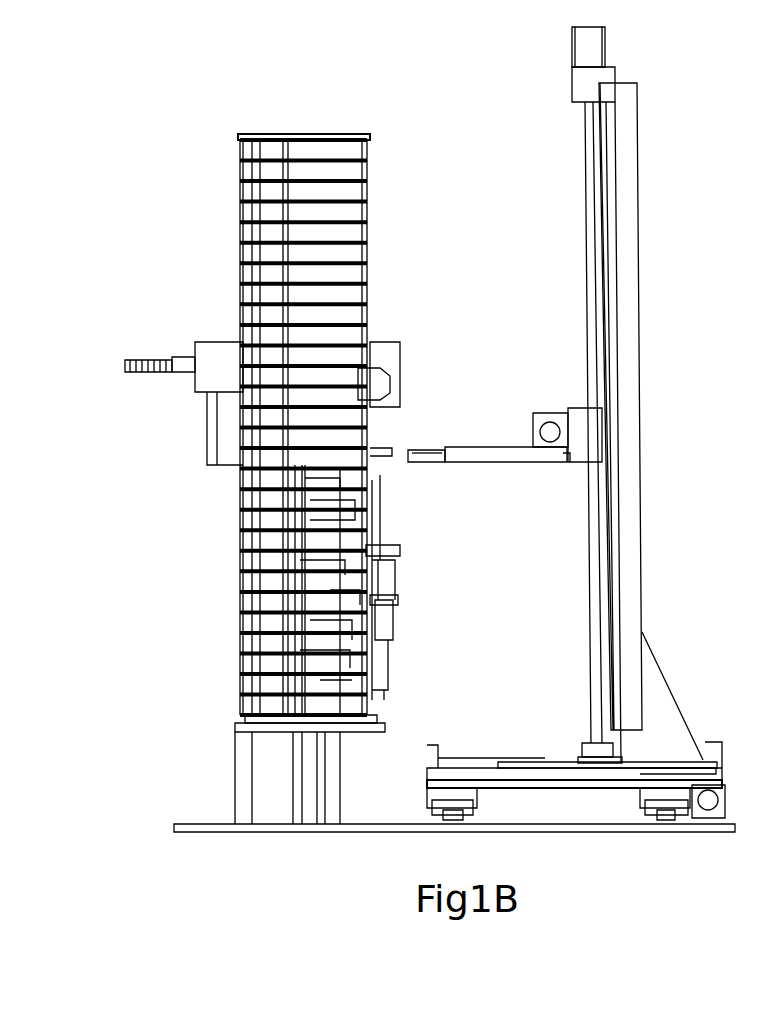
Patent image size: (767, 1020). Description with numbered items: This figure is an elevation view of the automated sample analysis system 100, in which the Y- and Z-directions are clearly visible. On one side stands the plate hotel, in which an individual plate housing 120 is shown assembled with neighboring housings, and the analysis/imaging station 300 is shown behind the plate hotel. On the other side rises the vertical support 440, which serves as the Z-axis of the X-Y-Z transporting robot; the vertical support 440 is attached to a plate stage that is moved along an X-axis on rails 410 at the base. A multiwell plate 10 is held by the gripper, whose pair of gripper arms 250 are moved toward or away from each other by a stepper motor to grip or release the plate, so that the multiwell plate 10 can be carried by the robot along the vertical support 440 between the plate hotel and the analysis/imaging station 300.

The automated sample analysis system 100 is at (428, 108).
The plate housing 120 is at (270, 190).
The analysis/imaging station 300 is at (232, 447).
The multiwell plate 10 is at (430, 452).
The gripper arms 250 is at (490, 455).
The vertical support 440 is at (615, 350).
The rails 410 is at (455, 817).